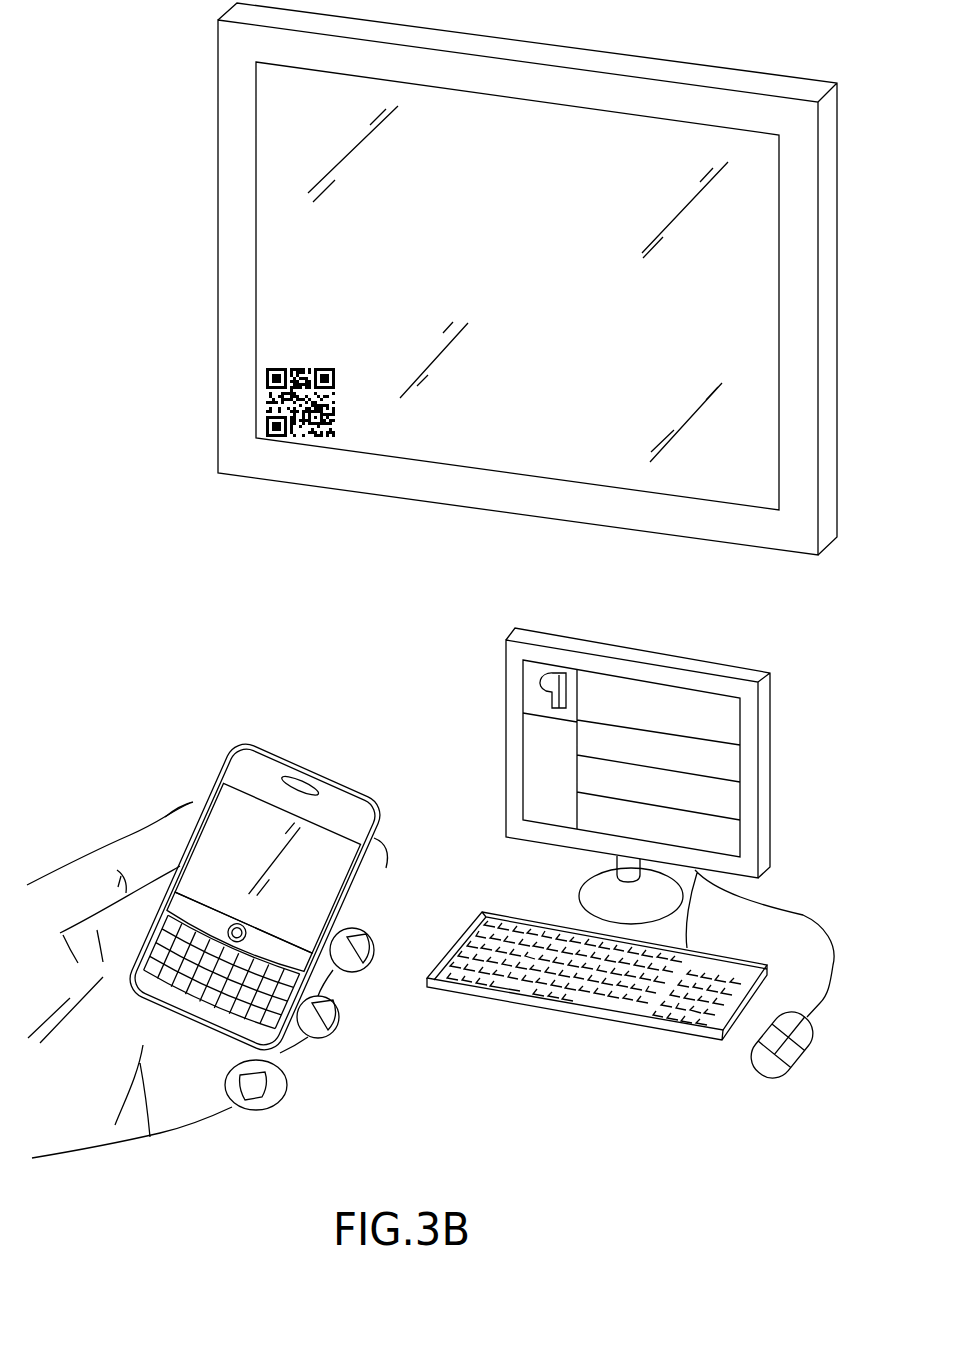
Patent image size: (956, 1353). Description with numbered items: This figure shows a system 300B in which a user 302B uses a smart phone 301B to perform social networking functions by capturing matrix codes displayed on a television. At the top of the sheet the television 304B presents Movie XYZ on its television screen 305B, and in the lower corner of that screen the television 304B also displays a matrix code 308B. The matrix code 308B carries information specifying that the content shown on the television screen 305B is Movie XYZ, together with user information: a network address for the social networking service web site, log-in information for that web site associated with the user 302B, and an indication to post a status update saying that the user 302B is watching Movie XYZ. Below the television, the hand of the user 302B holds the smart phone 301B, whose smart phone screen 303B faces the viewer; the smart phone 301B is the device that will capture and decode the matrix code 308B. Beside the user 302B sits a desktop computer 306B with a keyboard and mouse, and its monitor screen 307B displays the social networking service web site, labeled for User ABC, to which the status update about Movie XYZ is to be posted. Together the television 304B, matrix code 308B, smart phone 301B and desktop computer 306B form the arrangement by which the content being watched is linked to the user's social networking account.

The system environment 300B is at (696, 1166).
The smart phone 301B is at (220, 767).
The user 302B is at (48, 880).
The smart phone screen 303B is at (342, 855).
The television 304B is at (218, 37).
The television screen 305B is at (273, 153).
The desktop computer 306B is at (510, 702).
The monitor screen 307B is at (547, 797).
The matrix code 308B is at (266, 374).